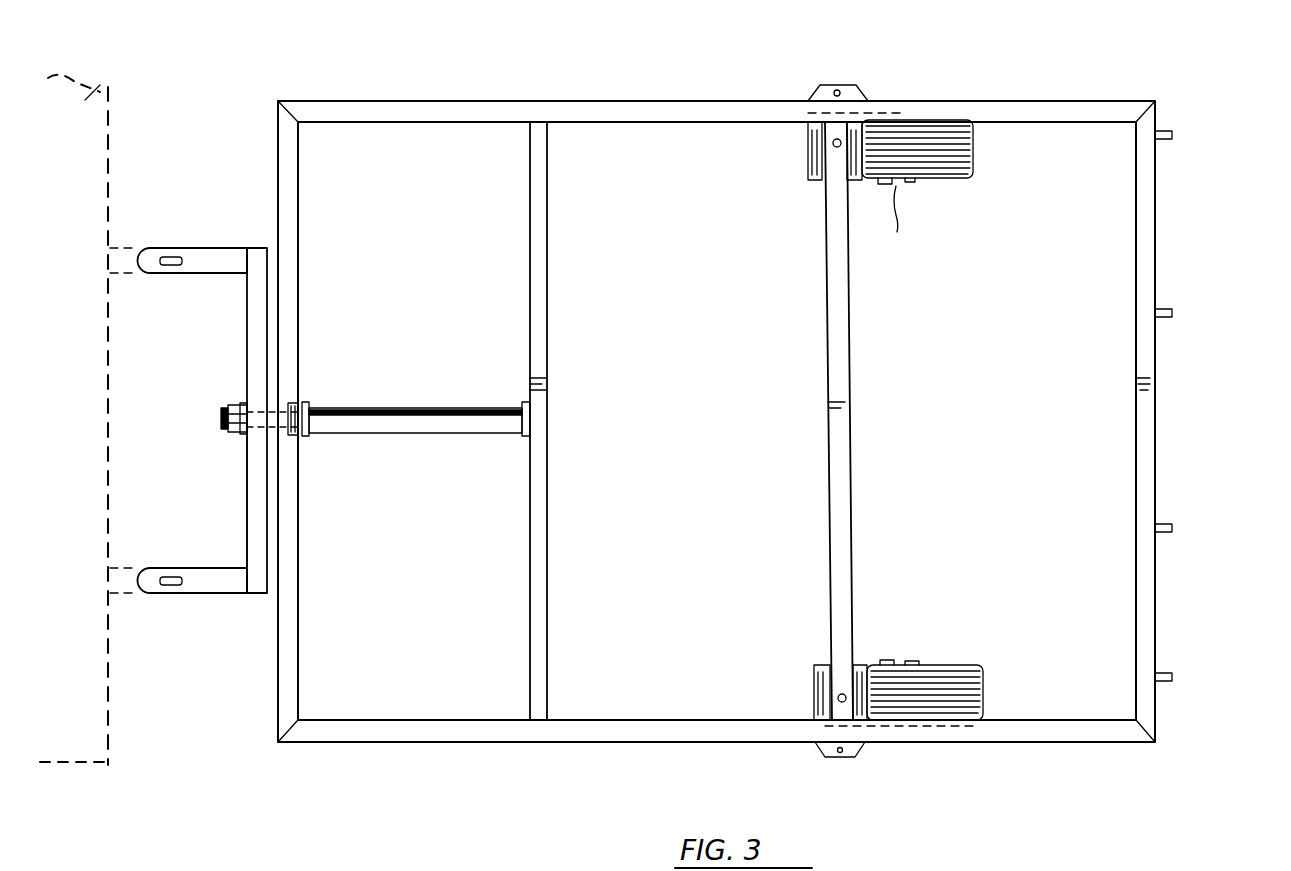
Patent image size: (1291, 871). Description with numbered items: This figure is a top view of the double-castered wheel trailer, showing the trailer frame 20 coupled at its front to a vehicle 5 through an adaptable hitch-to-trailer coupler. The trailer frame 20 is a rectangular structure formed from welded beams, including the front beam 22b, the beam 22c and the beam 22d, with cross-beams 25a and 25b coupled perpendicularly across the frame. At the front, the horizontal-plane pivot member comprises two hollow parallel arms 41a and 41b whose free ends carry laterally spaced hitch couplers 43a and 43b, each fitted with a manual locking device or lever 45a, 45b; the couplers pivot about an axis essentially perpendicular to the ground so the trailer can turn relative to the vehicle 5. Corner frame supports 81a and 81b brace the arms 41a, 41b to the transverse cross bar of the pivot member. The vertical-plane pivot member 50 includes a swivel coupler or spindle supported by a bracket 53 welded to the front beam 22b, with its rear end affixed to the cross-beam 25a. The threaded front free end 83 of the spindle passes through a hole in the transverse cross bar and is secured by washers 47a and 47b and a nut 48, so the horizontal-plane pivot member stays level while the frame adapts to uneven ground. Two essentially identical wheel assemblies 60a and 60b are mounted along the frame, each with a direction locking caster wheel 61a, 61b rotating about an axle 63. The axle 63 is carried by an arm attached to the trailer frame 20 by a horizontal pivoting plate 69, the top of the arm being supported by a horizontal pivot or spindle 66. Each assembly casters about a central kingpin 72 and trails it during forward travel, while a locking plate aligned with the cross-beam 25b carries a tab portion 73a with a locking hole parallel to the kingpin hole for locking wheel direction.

The vehicle 5 is at (80, 98).
The trailer frame 20 is at (1120, 80).
The front beam 22b is at (295, 675).
The beam 22c is at (690, 742).
The beam 22d is at (722, 110).
The cross-beam 25a is at (538, 490).
The cross-beam 25b is at (838, 426).
The parallel arm 41a is at (191, 252).
The parallel arm 41b is at (194, 647).
The hitch coupler 43a is at (143, 248).
The hitch coupler 43b is at (143, 594).
The manual locking device or lever 45a is at (170, 272).
The manual locking device or lever 45b is at (170, 586).
The washer 47a is at (242, 400).
The washer 47b is at (290, 347).
The nut 48 is at (226, 414).
The vertical-plane pivot member 50 is at (336, 382).
The bracket 53 is at (310, 405).
The wheel assembly 60a is at (884, 143).
The wheel assembly 60b is at (933, 659).
The direction locking caster wheel 61a is at (975, 180).
The direction locking caster wheel 61b is at (975, 690).
The axle 63 is at (955, 198).
The horizontal pivot or spindle 66 is at (878, 100).
The horizontal pivoting plate 69 is at (811, 170).
The kingpin 72 is at (830, 147).
The tab portion 73a is at (822, 95).
The corner frame support 81a is at (247, 287).
The corner frame support 81b is at (247, 555).
The front free end 83 is at (224, 427).